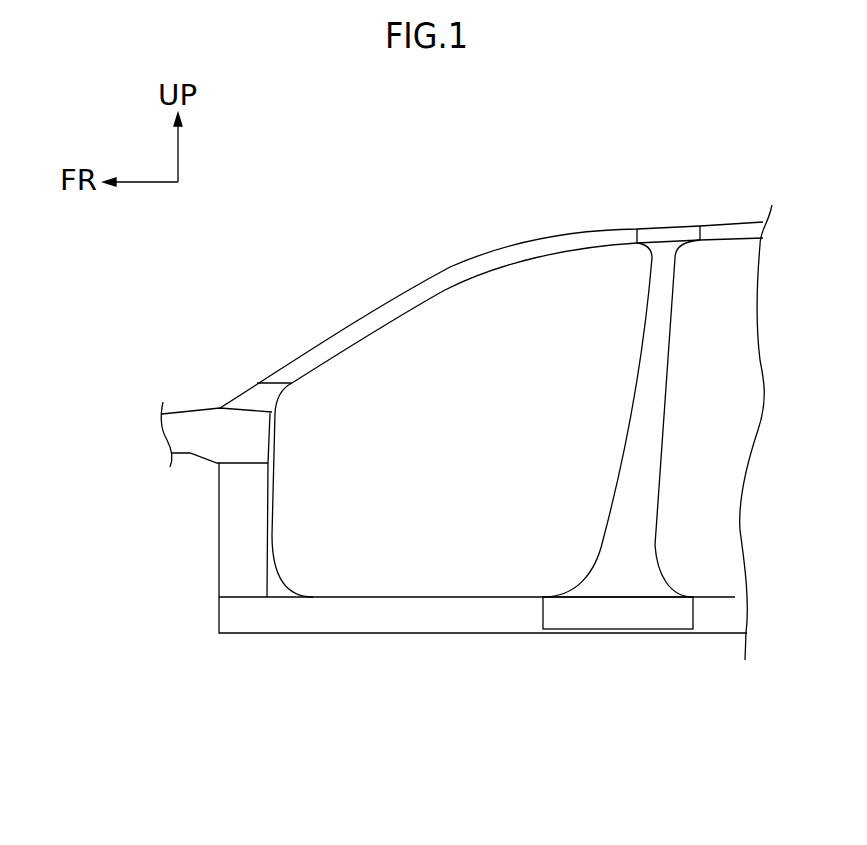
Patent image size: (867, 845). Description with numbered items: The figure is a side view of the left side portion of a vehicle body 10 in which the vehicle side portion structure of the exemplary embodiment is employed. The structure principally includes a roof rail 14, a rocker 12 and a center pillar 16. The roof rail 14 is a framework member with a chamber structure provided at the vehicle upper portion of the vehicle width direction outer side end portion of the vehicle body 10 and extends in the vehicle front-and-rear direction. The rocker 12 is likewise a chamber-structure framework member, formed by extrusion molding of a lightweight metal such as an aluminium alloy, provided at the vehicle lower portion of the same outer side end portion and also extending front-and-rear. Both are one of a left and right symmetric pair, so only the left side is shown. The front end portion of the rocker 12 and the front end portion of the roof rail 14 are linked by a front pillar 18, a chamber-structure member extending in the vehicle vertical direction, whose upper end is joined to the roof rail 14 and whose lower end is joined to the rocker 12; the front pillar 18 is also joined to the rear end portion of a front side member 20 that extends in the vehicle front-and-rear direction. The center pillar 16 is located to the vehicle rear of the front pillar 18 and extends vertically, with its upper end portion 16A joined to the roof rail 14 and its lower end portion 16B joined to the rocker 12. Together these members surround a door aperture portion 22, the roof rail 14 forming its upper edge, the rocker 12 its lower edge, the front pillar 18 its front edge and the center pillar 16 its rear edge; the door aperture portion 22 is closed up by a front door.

The vehicle body 10 is at (403, 267).
The rocker 12 is at (390, 637).
The roof rail 14 is at (548, 233).
The center pillar 16 is at (667, 415).
The upper end portion 16A is at (668, 227).
The lower end portion 16B is at (623, 633).
The front pillar 18 is at (217, 528).
The front side member 20 is at (185, 410).
The door aperture portion 22 is at (370, 490).